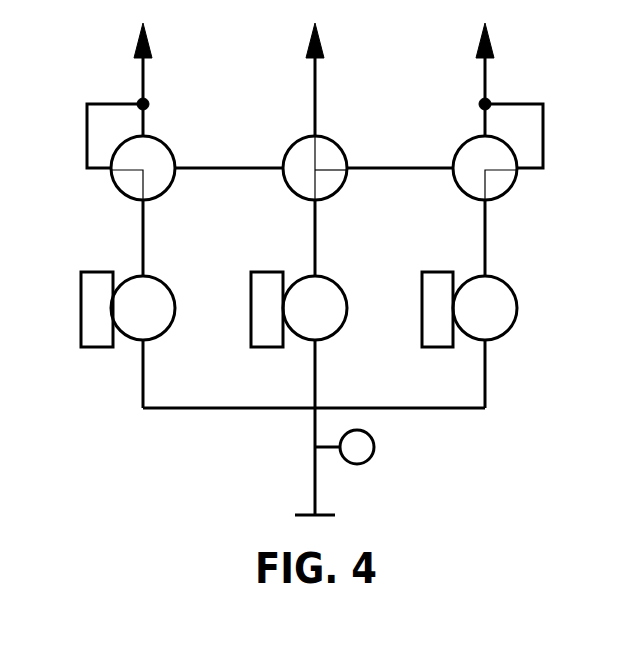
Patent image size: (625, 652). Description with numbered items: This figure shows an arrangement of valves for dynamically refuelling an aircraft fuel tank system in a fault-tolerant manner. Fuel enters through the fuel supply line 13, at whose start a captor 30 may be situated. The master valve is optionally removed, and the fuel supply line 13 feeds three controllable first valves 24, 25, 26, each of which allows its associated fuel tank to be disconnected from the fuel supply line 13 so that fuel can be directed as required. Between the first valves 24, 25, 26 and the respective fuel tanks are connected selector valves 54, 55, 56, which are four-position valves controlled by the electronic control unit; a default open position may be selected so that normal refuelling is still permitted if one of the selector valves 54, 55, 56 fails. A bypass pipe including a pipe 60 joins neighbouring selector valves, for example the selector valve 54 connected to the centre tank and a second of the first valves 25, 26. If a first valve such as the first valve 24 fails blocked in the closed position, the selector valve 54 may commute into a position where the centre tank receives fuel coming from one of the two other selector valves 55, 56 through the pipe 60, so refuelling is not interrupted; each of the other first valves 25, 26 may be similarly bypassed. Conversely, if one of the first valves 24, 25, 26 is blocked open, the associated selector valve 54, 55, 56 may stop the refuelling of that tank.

The fuel supply line 13 is at (313, 488).
The first valve 24 is at (345, 290).
The first valve 25 is at (173, 290).
The first valve 26 is at (513, 290).
The captor 30 is at (373, 456).
The selector valve 54 is at (330, 138).
The selector valve 55 is at (158, 140).
The selector valve 56 is at (468, 138).
The pipe 60 is at (225, 170).